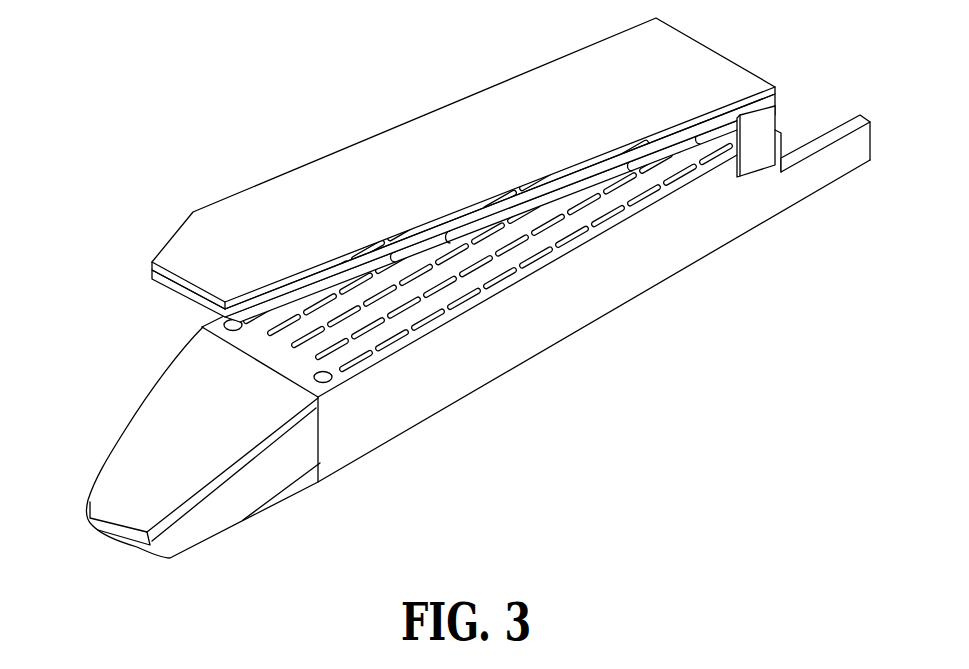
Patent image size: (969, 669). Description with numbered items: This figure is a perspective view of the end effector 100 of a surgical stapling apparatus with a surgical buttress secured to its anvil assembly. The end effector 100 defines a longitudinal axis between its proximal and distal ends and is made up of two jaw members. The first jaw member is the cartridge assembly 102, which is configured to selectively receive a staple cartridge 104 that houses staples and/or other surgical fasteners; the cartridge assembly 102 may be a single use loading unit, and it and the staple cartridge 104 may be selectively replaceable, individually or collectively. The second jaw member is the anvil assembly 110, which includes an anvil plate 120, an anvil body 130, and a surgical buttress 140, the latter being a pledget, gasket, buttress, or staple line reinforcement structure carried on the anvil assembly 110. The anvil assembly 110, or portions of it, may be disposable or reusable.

The end effector 100 is at (450, 291).
The cartridge assembly 102 is at (152, 492).
The staple cartridge 104 is at (412, 337).
The anvil assembly 110 is at (425, 173).
The anvil plate 120 is at (160, 286).
The anvil body 130 is at (188, 242).
The surgical buttress 140 is at (423, 245).